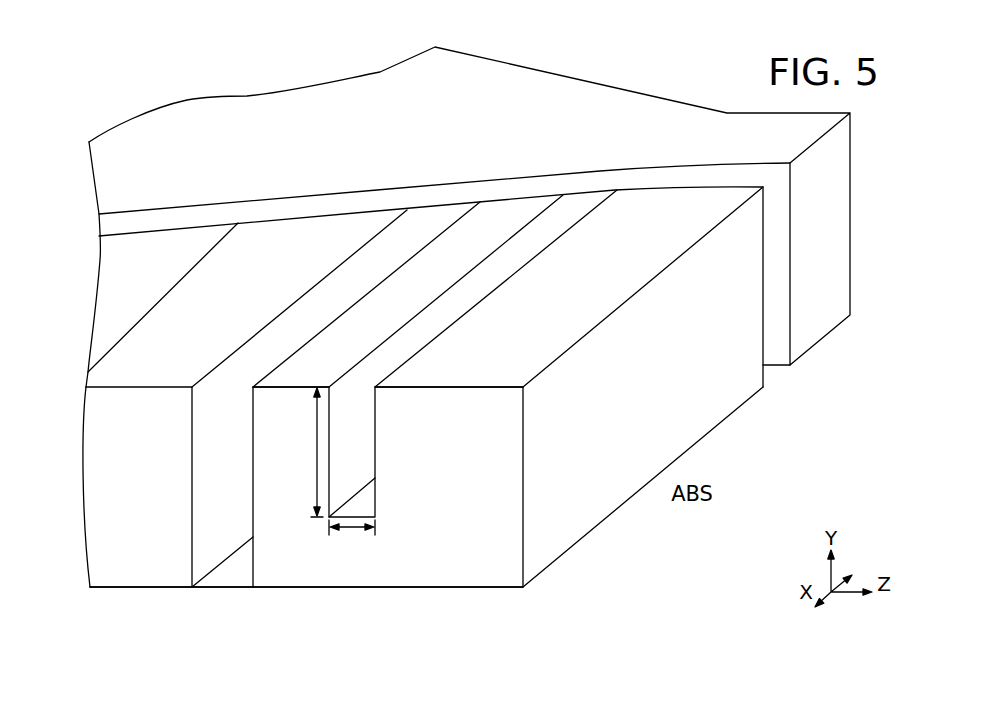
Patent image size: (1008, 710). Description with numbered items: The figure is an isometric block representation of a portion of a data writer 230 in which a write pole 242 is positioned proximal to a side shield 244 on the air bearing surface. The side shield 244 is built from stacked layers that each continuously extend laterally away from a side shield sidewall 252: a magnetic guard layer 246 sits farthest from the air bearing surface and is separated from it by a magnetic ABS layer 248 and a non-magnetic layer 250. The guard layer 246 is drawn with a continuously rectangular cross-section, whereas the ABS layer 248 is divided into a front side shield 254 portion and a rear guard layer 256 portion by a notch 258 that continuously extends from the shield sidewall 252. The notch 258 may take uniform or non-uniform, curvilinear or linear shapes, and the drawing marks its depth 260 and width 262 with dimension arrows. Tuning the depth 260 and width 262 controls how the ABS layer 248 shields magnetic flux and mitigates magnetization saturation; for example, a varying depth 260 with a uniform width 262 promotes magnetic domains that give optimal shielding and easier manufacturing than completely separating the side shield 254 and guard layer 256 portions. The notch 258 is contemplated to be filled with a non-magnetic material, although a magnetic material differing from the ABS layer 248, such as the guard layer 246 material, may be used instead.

The write head 230 is at (118, 64).
The write pole 242 is at (578, 147).
The side shield 244 is at (283, 600).
The magnetic guard layer 246 is at (117, 500).
The magnetic ABS layer 248 is at (427, 580).
The non-magnetic layer 250 is at (199, 591).
The side shield sidewall 252 is at (457, 198).
The front side shield portion 254 is at (465, 398).
The rear guard layer portion 256 is at (286, 398).
The notch 258 is at (380, 475).
The depth 260 is at (298, 452).
The width 262 is at (352, 538).